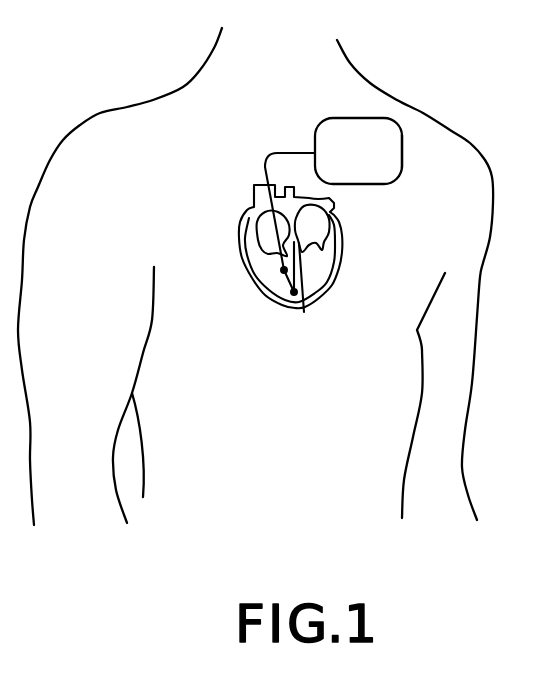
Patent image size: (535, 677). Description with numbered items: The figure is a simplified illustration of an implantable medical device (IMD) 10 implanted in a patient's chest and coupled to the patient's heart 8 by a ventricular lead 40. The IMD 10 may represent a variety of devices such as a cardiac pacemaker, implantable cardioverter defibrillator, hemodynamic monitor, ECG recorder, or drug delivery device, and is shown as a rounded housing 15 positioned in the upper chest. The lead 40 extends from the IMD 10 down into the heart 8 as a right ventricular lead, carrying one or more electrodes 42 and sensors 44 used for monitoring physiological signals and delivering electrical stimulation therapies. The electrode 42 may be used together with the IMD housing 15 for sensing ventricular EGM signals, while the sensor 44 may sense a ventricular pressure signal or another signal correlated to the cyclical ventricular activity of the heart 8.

The heart 8 is at (331, 288).
The implantable medical device 10 is at (345, 118).
The IMD housing 15 is at (402, 149).
The lead 40 is at (278, 152).
The electrode 42 is at (304, 313).
The sensor 44 is at (284, 270).